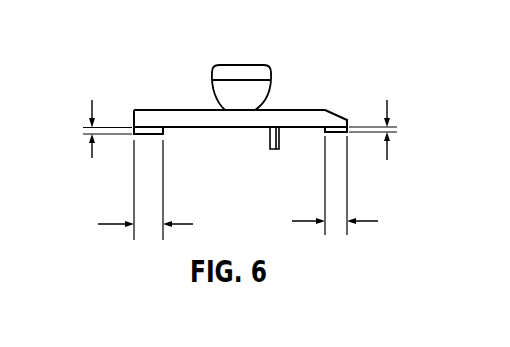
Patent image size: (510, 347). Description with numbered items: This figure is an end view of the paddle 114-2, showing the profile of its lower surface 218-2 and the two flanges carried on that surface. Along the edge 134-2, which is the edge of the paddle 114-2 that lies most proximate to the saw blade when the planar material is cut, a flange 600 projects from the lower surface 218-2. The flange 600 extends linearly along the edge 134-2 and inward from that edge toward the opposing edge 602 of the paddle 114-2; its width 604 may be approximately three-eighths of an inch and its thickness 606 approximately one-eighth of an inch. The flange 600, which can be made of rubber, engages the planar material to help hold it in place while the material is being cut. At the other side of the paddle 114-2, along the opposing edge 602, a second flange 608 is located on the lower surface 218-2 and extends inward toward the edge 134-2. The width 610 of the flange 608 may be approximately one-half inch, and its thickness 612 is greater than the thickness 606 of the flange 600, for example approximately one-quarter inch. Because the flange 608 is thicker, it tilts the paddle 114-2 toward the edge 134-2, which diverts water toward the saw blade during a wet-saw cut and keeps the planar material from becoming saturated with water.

The paddle 114-2 is at (156, 110).
The edge 134-2 is at (348, 119).
The lower surface 218-2 is at (305, 128).
The flange 600 is at (333, 130).
The opposing edge 602 is at (133, 113).
The width 604 is at (355, 185).
The thickness 606 is at (379, 144).
The flange 608 is at (150, 132).
The width 610 is at (127, 190).
The thickness 612 is at (103, 145).